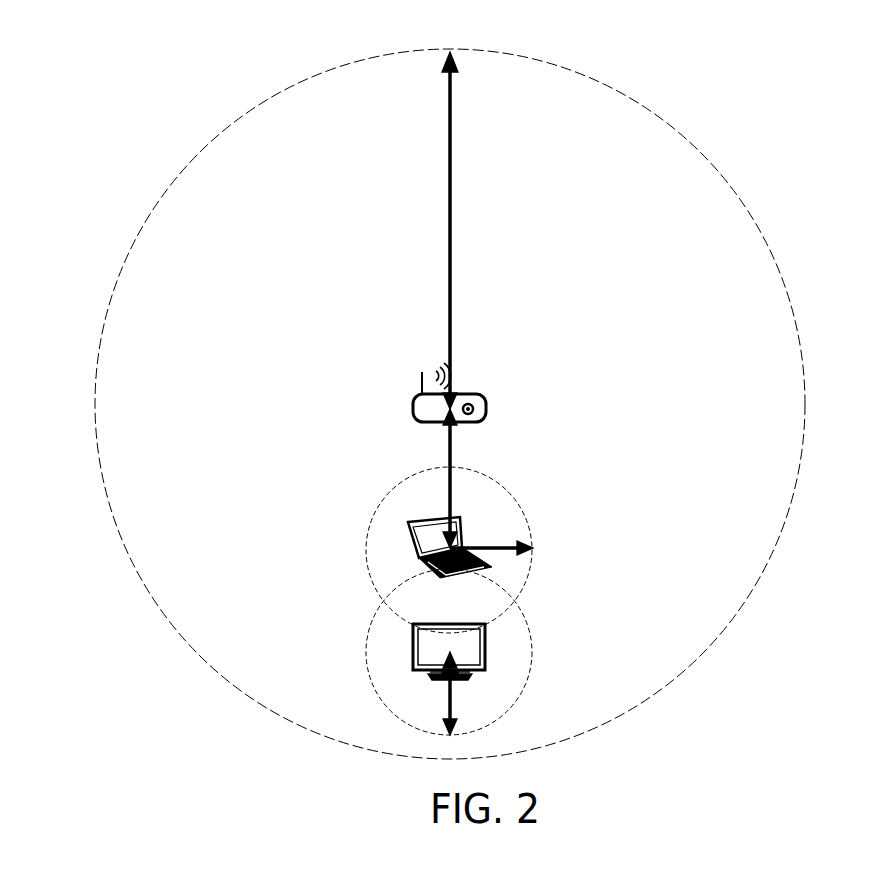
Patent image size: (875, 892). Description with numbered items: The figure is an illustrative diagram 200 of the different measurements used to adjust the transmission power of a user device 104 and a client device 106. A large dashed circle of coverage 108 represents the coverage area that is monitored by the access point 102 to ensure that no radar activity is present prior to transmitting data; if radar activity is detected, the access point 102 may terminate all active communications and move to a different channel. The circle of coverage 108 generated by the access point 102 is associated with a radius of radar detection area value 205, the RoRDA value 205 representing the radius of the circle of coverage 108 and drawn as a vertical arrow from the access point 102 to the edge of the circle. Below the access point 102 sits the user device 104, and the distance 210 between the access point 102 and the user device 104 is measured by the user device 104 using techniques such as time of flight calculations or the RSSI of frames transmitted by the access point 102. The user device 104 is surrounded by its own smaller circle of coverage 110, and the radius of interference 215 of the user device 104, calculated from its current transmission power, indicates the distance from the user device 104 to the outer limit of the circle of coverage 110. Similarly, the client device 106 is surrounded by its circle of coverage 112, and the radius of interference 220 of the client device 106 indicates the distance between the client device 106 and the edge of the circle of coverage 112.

The illustrative diagram 200 is at (779, 96).
The circle of coverage 108 is at (587, 80).
The radius of radar detection area (RoRDA) value 205 is at (447, 212).
The distance 210 is at (453, 452).
The access point 102 is at (482, 397).
The circle of coverage of the user device 110 is at (394, 485).
The user device 104 is at (460, 520).
The radius of interference (RoI) of the user device 215 is at (505, 553).
The circle of coverage of the client device 112 is at (375, 617).
The client device 106 is at (413, 660).
The radius of interference (RoI) of the client device 220 is at (455, 695).